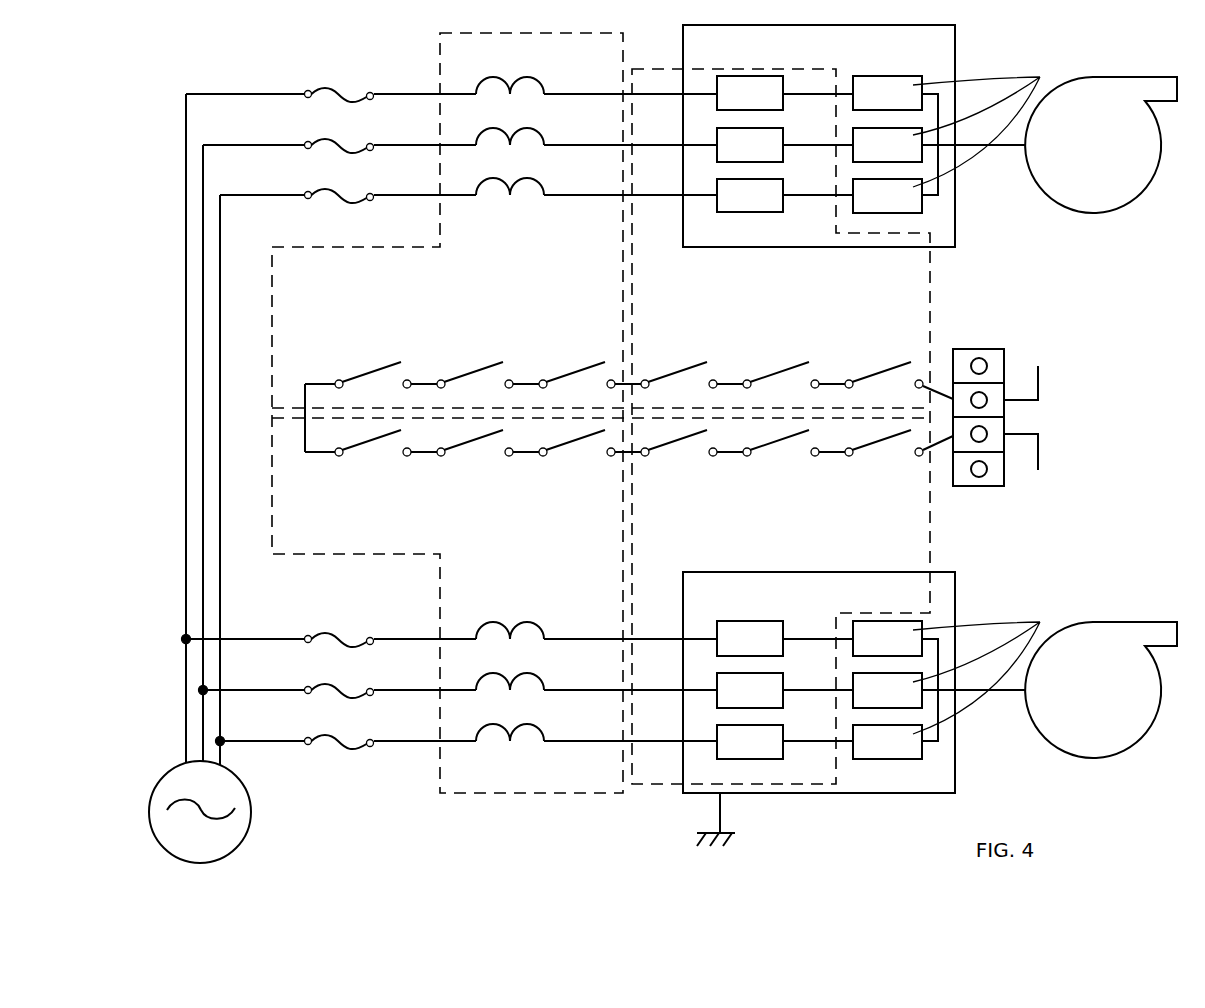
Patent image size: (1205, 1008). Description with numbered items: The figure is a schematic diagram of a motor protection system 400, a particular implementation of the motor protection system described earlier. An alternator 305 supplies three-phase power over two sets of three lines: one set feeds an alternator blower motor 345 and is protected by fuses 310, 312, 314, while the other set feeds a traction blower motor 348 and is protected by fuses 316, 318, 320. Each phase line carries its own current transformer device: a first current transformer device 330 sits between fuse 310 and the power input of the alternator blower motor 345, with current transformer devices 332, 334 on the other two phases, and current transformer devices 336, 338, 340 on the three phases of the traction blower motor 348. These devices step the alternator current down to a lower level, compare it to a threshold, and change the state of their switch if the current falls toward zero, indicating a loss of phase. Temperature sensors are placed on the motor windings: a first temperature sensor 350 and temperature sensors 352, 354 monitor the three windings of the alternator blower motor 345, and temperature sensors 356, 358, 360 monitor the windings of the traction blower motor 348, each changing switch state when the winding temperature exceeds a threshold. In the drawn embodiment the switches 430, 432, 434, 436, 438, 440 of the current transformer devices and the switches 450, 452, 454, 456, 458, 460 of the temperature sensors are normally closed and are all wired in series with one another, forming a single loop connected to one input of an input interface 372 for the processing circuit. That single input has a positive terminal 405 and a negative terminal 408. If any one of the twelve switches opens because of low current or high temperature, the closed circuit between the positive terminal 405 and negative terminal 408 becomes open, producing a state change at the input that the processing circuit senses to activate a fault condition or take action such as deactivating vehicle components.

The motor protection system 400 is at (108, 146).
The alternator 305 is at (173, 826).
The fuse 310 is at (347, 87).
The fuse 312 is at (347, 138).
The fuse 314 is at (347, 188).
The fuse 316 is at (347, 633).
The fuse 318 is at (347, 684).
The fuse 320 is at (347, 735).
The first current transformer device 330 is at (541, 81).
The current transformer device 332 is at (541, 132).
The current transformer device 334 is at (541, 182).
The current transformer device 336 is at (541, 627).
The current transformer device 338 is at (541, 678).
The current transformer device 340 is at (541, 729).
The alternator blower motor 345 is at (936, 226).
The traction blower motor 348 is at (910, 784).
The first temperature sensor 350 is at (722, 88).
The temperature sensor 352 is at (768, 159).
The temperature sensor 354 is at (768, 209).
The temperature sensor 356 is at (722, 633).
The temperature sensor 358 is at (768, 705).
The temperature sensor 360 is at (768, 756).
The input interface 372 is at (996, 359).
The positive terminal 405 is at (1000, 413).
The negative terminal 408 is at (1000, 447).
The switch 430 is at (574, 370).
The switch 432 is at (472, 370).
The switch 434 is at (370, 370).
The switch 436 is at (370, 444).
The switch 438 is at (472, 444).
The switch 440 is at (574, 444).
The switch 450 is at (880, 370).
The switch 452 is at (778, 370).
The switch 454 is at (676, 370).
The switch 456 is at (676, 444).
The switch 458 is at (778, 444).
The switch 460 is at (880, 444).